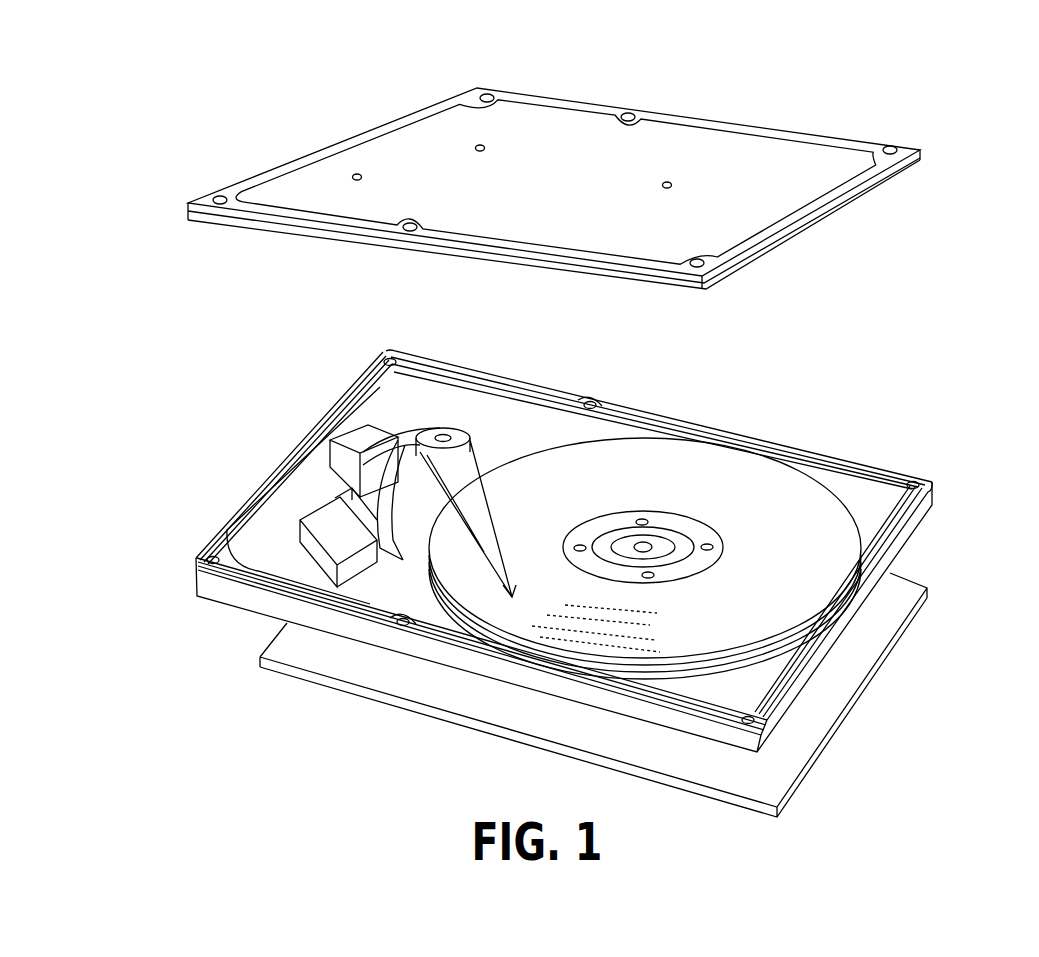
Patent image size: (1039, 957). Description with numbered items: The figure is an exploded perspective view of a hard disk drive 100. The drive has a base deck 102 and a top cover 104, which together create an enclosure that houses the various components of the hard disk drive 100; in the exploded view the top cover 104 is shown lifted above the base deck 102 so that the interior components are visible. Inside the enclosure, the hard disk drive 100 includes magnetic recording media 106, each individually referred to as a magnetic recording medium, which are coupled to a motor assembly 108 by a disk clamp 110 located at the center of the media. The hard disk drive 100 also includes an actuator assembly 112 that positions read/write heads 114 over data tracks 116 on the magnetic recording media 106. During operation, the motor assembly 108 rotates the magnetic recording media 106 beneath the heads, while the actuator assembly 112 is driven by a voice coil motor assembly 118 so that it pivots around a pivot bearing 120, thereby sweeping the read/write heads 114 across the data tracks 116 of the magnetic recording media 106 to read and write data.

The hard disk drive 100 is at (140, 143).
The base deck 102 is at (923, 510).
The top cover 104 is at (830, 152).
The magnetic recording media 106 is at (793, 490).
The motor assembly 108 is at (664, 540).
The disk clamp 110 is at (608, 522).
The actuator assembly 112 is at (480, 508).
The read/write heads 114 is at (512, 592).
The data tracks 116 is at (668, 640).
The voice coil motor assembly 118 is at (326, 370).
The pivot bearing 120 is at (430, 437).